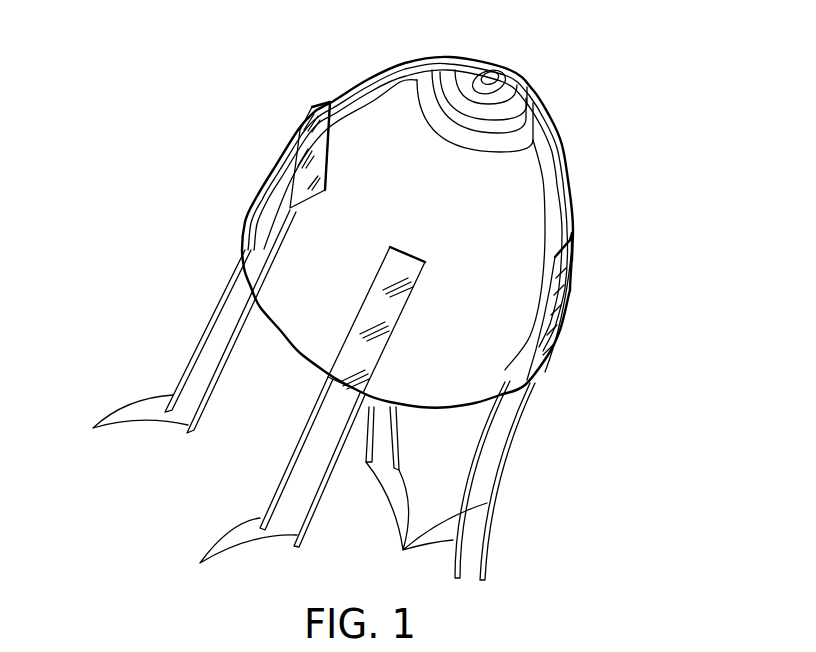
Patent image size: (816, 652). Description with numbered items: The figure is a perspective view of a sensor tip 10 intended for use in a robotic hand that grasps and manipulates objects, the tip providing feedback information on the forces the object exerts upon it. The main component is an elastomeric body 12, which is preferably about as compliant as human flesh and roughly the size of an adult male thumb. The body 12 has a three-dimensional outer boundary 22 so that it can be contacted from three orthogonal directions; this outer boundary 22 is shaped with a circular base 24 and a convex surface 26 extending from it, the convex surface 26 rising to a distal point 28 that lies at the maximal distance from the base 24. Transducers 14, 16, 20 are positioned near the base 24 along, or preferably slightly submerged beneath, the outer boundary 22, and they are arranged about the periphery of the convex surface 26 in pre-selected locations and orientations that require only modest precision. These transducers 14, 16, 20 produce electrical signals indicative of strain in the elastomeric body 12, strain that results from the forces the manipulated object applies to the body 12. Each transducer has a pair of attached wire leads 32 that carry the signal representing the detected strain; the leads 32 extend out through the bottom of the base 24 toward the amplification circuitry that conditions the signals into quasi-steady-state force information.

The sensor tip 10 is at (437, 214).
The elastomeric body 12 is at (568, 198).
The transducer 14 is at (352, 330).
The transducer 16 is at (550, 293).
The transducer 20 is at (303, 128).
The outer boundary 22 is at (253, 198).
The circular base 24 is at (263, 310).
The convex surface 26 is at (366, 80).
The distal point 28 is at (492, 78).
The wire leads 32 is at (100, 432).